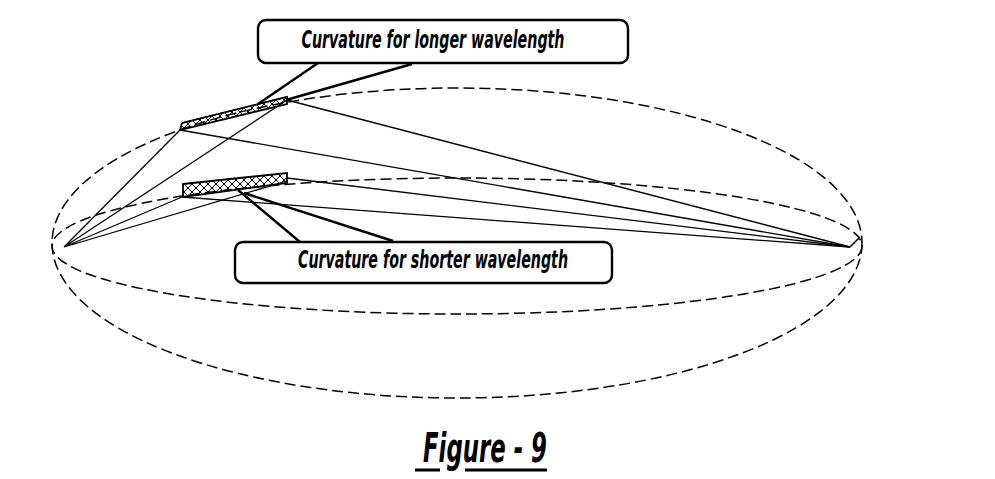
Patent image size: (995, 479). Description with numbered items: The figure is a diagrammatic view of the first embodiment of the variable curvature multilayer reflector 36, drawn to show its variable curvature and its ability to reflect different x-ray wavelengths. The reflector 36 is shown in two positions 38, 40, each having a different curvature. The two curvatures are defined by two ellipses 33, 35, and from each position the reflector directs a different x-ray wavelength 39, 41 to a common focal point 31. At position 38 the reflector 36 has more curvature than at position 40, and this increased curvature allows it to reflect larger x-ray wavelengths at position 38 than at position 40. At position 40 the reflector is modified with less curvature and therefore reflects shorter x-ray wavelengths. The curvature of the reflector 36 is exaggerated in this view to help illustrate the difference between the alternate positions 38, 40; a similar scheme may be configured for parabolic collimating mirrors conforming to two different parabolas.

The focal point 31 is at (860, 237).
The ellipse 33 is at (810, 167).
The ellipse 35 is at (828, 218).
The variable curvature multilayer reflector 36 is at (202, 118).
The position 38 is at (178, 124).
The x-ray wavelength 39 is at (632, 186).
The position 40 is at (180, 184).
The x-ray wavelength 41 is at (694, 232).